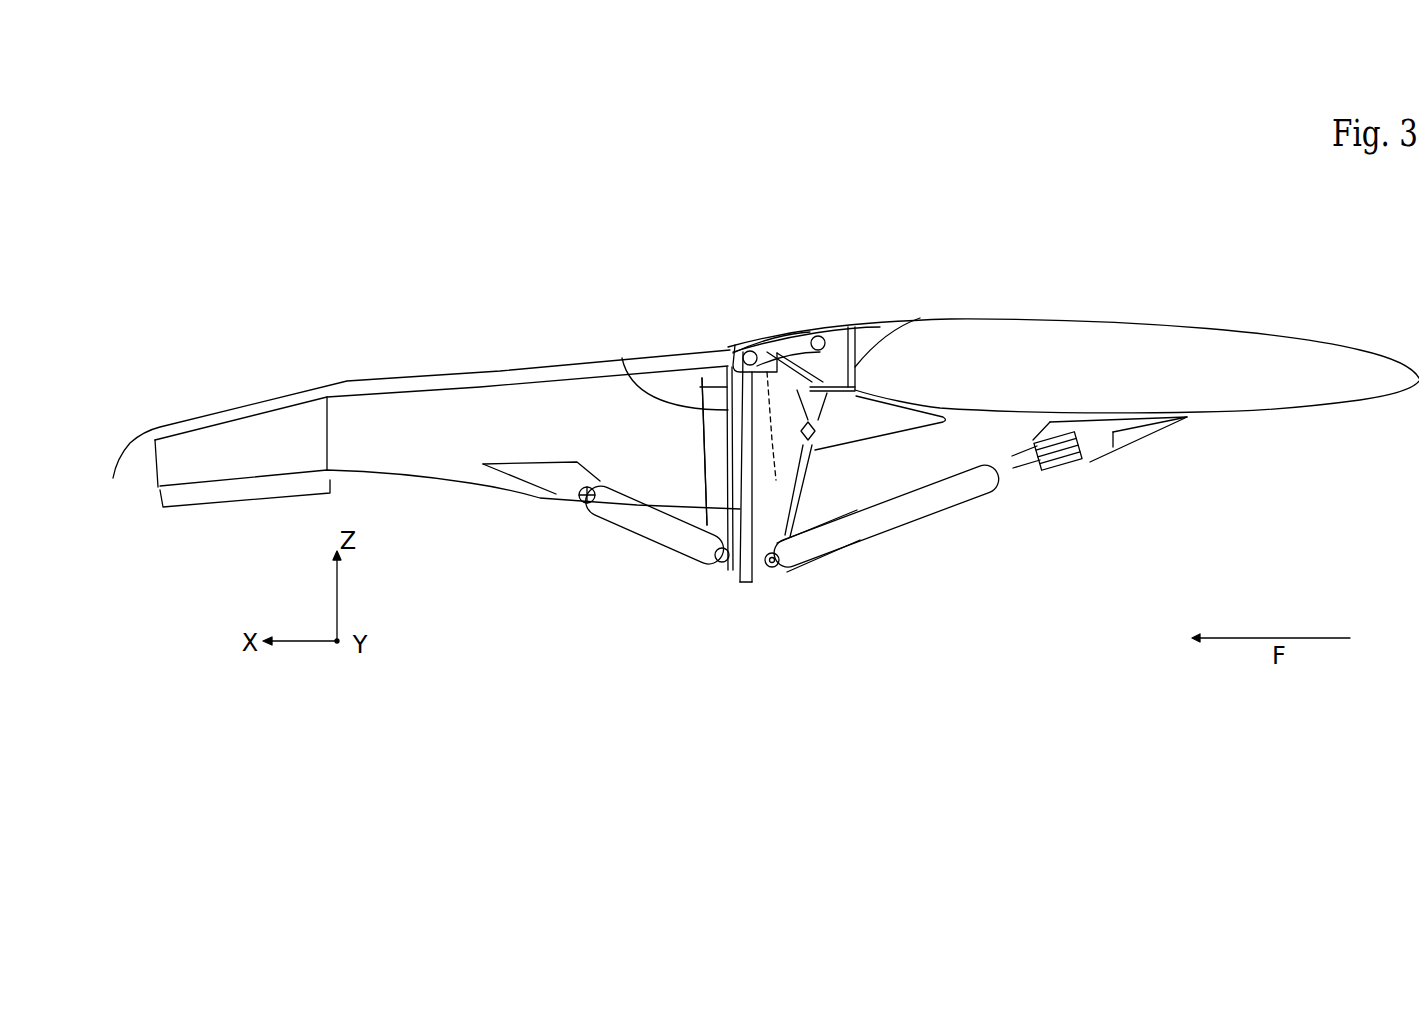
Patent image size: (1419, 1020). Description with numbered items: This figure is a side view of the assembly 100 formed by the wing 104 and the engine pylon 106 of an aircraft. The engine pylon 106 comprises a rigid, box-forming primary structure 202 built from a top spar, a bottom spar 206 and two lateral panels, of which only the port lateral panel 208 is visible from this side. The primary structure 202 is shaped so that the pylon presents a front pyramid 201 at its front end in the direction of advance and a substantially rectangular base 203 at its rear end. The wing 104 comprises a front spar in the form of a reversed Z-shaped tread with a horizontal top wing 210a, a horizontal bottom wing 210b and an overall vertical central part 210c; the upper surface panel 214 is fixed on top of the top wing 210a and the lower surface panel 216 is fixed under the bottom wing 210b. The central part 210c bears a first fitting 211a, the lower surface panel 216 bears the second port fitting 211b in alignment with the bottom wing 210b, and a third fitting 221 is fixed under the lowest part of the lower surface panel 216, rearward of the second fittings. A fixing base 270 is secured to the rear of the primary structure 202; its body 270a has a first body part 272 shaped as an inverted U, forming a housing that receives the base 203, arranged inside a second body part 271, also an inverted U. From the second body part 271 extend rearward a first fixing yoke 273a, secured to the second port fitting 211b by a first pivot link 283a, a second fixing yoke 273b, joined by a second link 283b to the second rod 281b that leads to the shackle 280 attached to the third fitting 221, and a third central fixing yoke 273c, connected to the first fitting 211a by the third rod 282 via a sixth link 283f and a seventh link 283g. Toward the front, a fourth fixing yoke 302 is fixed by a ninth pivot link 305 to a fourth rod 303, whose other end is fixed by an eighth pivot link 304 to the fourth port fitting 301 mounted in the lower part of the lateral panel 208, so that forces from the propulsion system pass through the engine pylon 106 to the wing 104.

The assembly 100 is at (1032, 666).
The wing 104 is at (1092, 371).
The engine pylon 106 is at (445, 352).
The front pyramid 201 is at (247, 505).
The primary structure 202 is at (345, 380).
The base 203 is at (632, 361).
The bottom spar 206 is at (458, 490).
The lateral panel 208 is at (462, 442).
The top wing of the front spar 210a is at (885, 323).
The bottom wing of the front spar 210b is at (782, 337).
The central part of the front spar 210c is at (870, 365).
The first fitting 211a is at (849, 323).
The second port fitting 211b is at (870, 427).
The upper surface panel 214 is at (1325, 340).
The lower surface panel 216 is at (1307, 407).
The third fitting 221 is at (1107, 447).
The fixing base 270 is at (728, 333).
The body 270a is at (739, 590).
The second body part 271 is at (740, 592).
The first body part 272 is at (700, 357).
The first fixing yoke 273a is at (803, 548).
The second fixing yoke 273b is at (770, 575).
The third central fixing yoke 273c is at (702, 376).
The shackle 280 is at (1032, 472).
The second rod 281b is at (913, 520).
The third rod 282 is at (780, 350).
The first pivot link 283a is at (812, 445).
The second link 283b is at (779, 580).
The sixth link 283f is at (747, 350).
The seventh link 283g is at (818, 335).
The fourth port fitting 301 is at (552, 483).
The fourth fixing yoke 302 is at (738, 585).
The fourth rod 303 is at (618, 512).
The eighth pivot link 304 is at (587, 508).
The ninth pivot link 305 is at (714, 563).